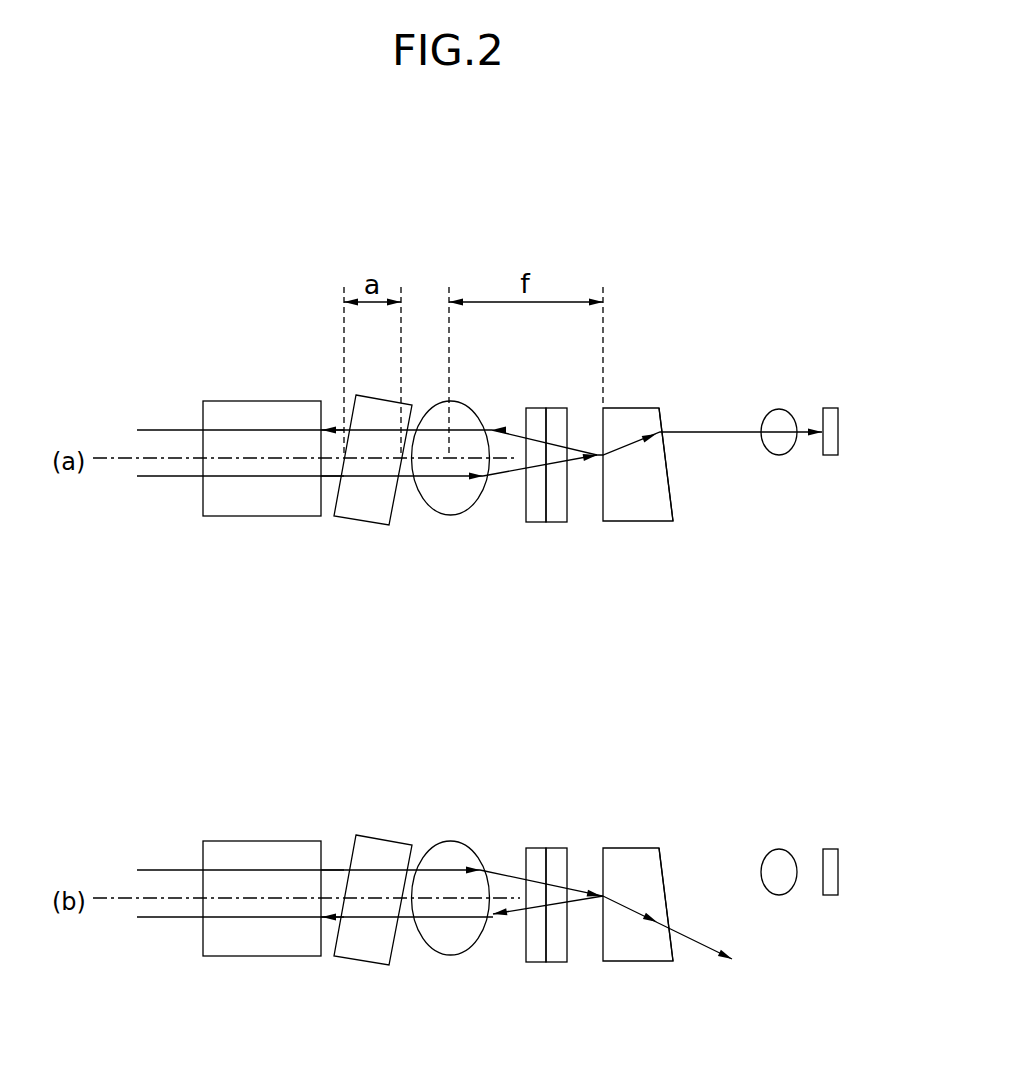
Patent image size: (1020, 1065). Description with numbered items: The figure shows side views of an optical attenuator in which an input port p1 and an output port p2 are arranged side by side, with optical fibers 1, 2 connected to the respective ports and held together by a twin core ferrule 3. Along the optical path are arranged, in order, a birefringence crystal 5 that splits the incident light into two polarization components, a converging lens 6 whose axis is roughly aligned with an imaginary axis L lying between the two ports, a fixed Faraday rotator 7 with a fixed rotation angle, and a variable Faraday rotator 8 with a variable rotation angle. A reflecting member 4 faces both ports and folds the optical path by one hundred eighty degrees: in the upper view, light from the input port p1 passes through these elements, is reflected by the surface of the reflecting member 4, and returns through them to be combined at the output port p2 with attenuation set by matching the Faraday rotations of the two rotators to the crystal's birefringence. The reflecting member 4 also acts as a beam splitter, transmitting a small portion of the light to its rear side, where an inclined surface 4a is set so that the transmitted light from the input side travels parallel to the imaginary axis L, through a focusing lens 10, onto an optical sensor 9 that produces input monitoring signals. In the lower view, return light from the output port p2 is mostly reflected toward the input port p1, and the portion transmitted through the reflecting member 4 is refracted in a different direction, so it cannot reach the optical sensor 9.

The optical fiber 1 is at (167, 477).
The optical fiber 2 is at (160, 430).
The twin core ferrule 3 is at (253, 401).
The reflecting member 4 is at (628, 408).
The inclined surface 4a is at (668, 468).
The birefringence crystal 5 is at (370, 395).
The converging lens 6 is at (430, 402).
The fixed Faraday rotator 7 is at (532, 408).
The variable Faraday rotator 8 is at (558, 408).
The optical sensor 9 is at (828, 408).
The focusing lens 10 is at (778, 409).
The imaginary axis L is at (108, 461).
The input port p1 is at (320, 477).
The output port p2 is at (324, 430).